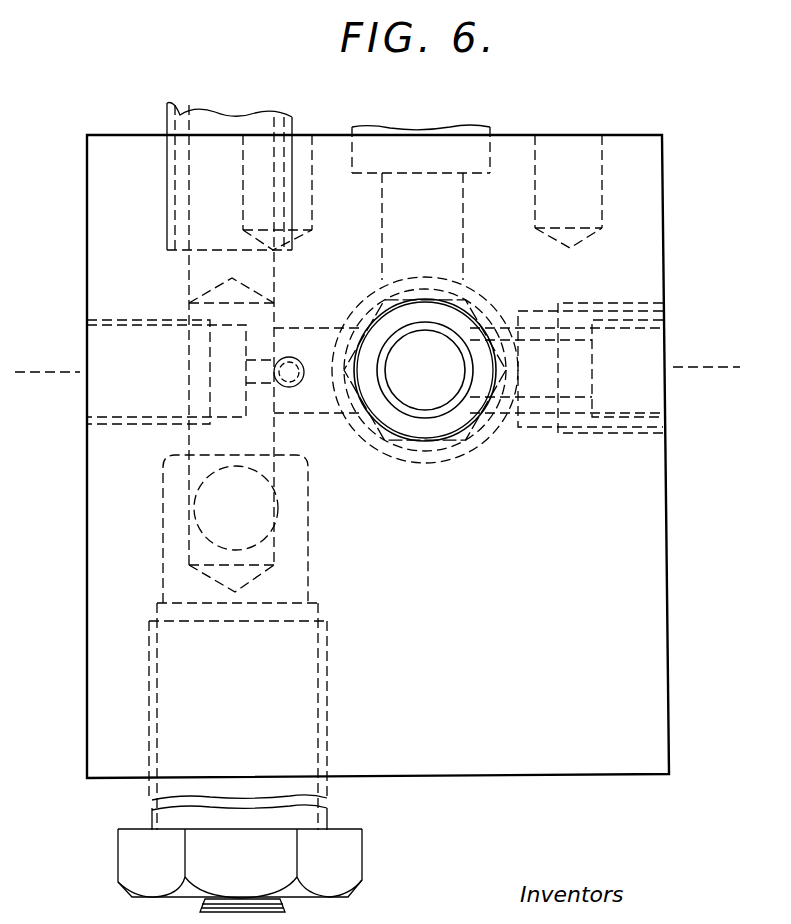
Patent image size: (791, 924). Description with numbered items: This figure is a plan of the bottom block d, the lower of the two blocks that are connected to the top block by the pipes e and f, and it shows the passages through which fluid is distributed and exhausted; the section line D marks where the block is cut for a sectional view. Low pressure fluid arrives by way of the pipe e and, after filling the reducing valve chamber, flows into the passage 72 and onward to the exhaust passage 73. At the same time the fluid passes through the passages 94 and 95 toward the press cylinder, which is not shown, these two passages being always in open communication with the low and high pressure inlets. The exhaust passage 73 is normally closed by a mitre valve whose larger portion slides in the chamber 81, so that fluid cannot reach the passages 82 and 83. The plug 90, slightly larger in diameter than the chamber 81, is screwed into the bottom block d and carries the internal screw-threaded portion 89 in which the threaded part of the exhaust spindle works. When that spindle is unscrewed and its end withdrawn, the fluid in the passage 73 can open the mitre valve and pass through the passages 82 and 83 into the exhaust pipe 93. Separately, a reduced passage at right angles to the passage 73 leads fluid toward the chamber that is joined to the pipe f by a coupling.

The exhaust pipe 93 is at (177, 115).
The passage 83 is at (188, 258).
The passage 95 is at (421, 149).
The passage 94 is at (492, 207).
The passage 72 is at (322, 337).
The exhaust passage 73 is at (258, 333).
The pipe f is at (88, 424).
The pipe e is at (664, 305).
The passage 82 is at (264, 534).
The chamber 81 is at (238, 702).
The plug 90 is at (348, 860).
The internal screw-threaded portion 89 is at (282, 898).
The bottom block d is at (378, 456).
The section line D is at (381, 358).